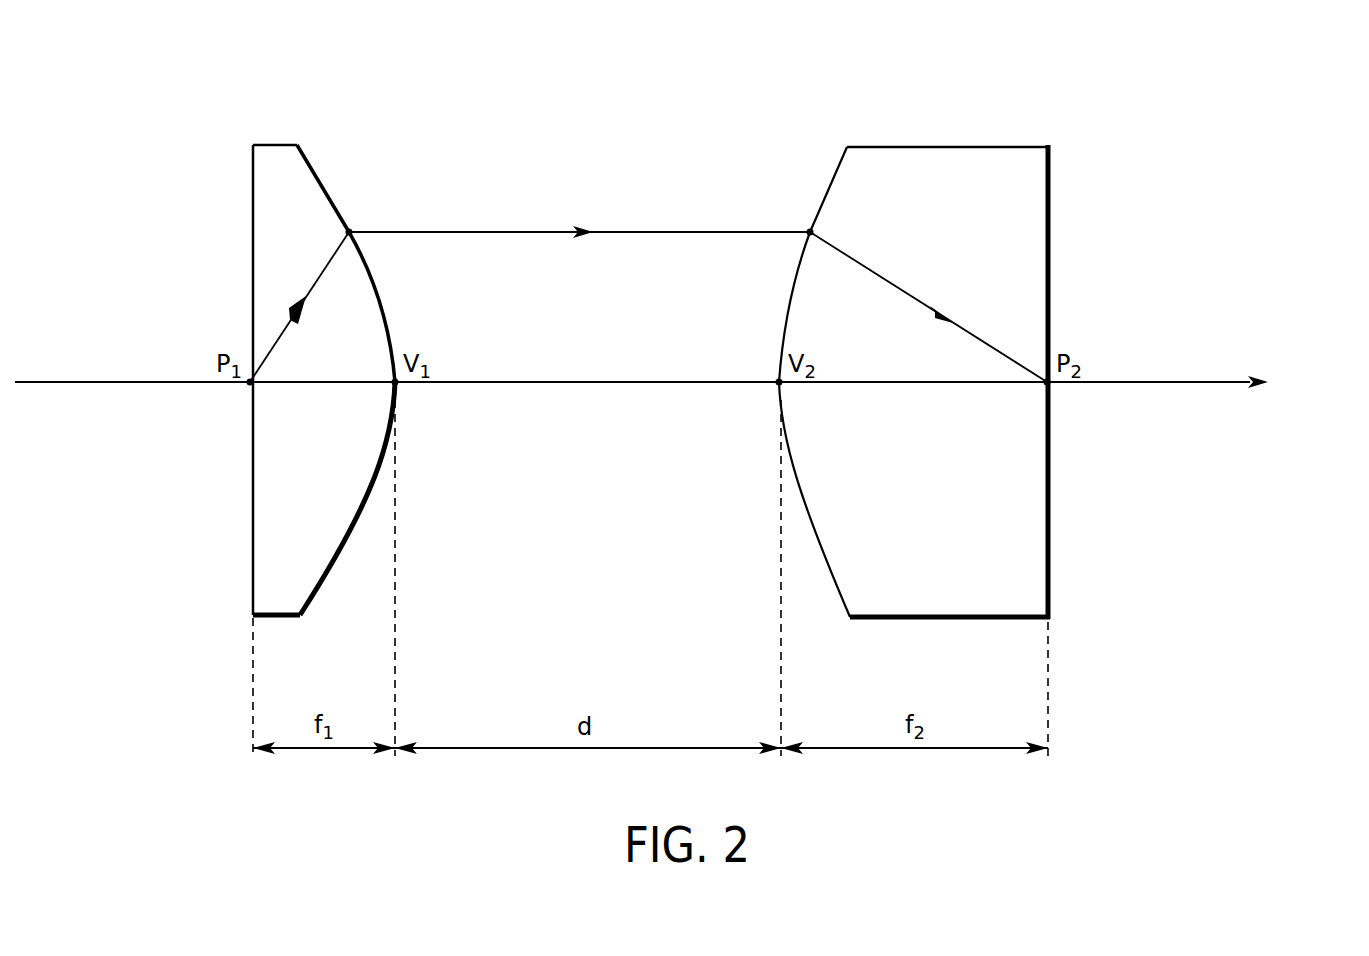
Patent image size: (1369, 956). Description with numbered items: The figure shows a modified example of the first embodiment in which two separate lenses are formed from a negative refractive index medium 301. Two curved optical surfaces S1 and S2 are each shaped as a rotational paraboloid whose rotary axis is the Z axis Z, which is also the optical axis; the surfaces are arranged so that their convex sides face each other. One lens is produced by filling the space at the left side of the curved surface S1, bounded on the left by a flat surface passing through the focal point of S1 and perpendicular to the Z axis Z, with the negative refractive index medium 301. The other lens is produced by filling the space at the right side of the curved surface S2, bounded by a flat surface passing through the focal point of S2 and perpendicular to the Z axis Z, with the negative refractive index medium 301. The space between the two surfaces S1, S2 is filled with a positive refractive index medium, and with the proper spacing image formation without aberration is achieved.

The negative refractive index medium 301 is at (651, 339).
The curved surface S1 is at (315, 165).
The curved surface S2 is at (830, 165).
The Z axis Z is at (684, 384).